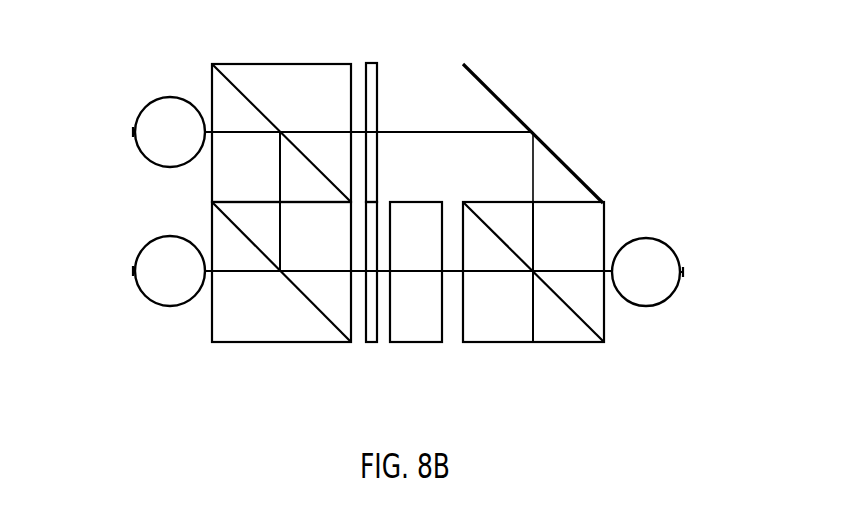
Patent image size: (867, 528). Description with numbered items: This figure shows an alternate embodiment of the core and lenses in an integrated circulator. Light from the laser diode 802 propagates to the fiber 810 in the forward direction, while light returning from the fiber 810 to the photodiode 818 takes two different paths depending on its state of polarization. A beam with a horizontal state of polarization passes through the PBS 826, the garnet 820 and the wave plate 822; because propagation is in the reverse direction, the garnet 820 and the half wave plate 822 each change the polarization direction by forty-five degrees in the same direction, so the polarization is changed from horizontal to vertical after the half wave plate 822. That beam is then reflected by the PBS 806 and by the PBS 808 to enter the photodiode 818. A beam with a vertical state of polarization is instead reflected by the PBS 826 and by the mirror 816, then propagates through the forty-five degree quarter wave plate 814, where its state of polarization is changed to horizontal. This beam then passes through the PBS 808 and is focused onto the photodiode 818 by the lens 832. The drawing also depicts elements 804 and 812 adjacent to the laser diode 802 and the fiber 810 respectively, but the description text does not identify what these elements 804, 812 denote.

The laser diode 802 is at (125, 271).
The collimator 804 is at (169, 310).
The PBS 806 is at (232, 347).
The PBS 808 is at (266, 47).
The fiber 810 is at (697, 272).
The collimator 812 is at (648, 310).
The 45° quarter wave plate 814 is at (373, 47).
The mirror 816 is at (514, 88).
The photodiode 818 is at (125, 132).
The garnet 820 is at (417, 347).
The half wave plate 822 is at (372, 347).
The PBS 826 is at (562, 347).
The lens 832 is at (169, 171).